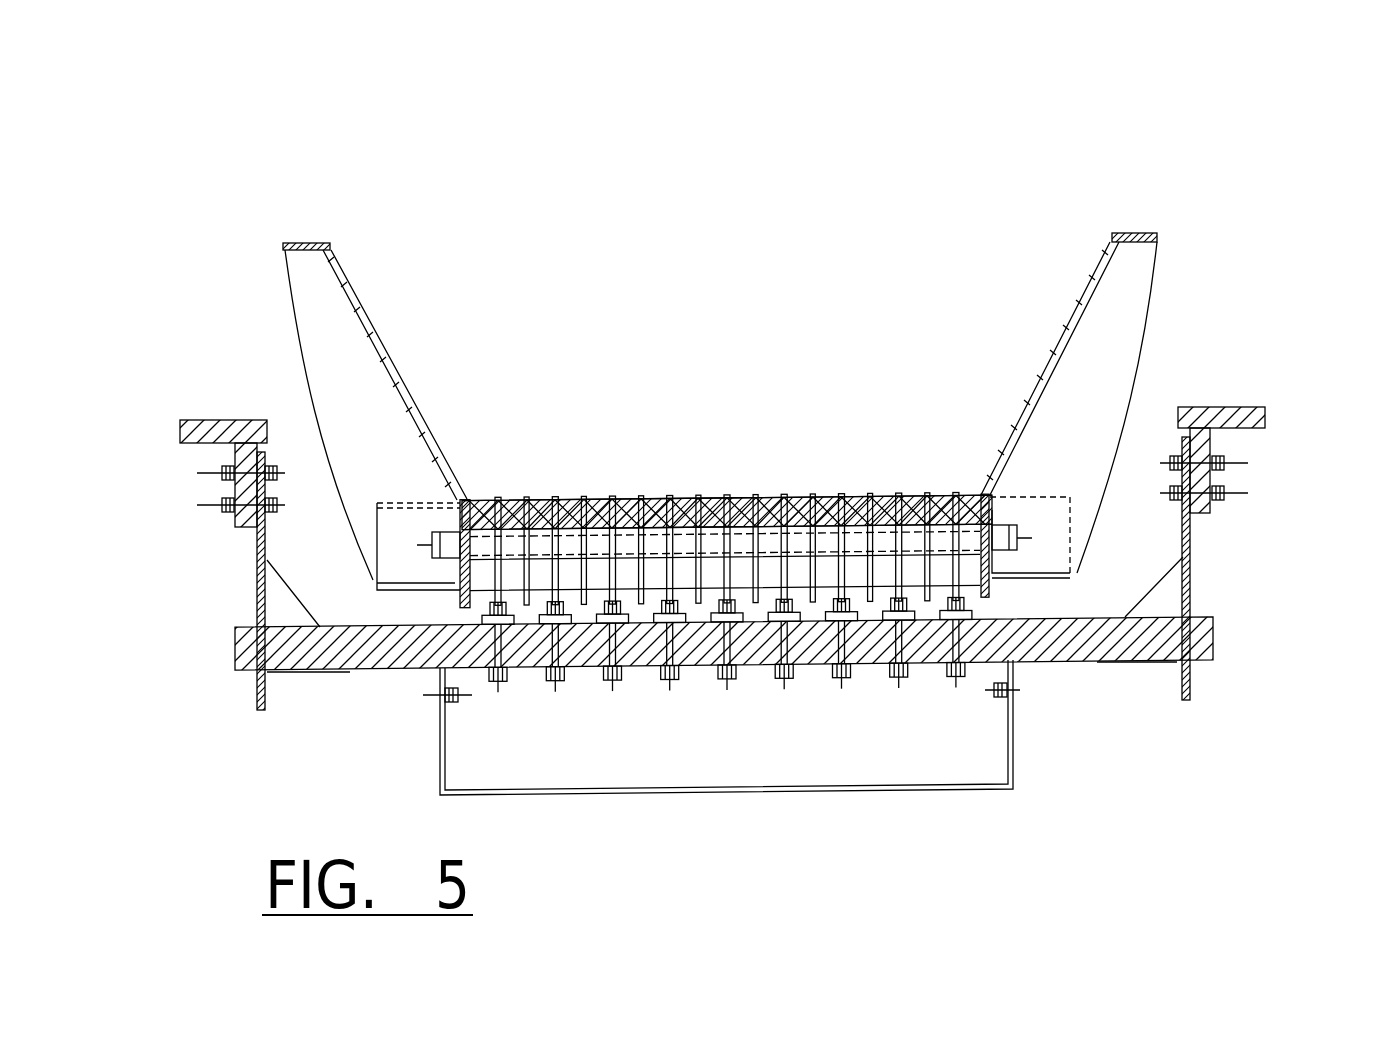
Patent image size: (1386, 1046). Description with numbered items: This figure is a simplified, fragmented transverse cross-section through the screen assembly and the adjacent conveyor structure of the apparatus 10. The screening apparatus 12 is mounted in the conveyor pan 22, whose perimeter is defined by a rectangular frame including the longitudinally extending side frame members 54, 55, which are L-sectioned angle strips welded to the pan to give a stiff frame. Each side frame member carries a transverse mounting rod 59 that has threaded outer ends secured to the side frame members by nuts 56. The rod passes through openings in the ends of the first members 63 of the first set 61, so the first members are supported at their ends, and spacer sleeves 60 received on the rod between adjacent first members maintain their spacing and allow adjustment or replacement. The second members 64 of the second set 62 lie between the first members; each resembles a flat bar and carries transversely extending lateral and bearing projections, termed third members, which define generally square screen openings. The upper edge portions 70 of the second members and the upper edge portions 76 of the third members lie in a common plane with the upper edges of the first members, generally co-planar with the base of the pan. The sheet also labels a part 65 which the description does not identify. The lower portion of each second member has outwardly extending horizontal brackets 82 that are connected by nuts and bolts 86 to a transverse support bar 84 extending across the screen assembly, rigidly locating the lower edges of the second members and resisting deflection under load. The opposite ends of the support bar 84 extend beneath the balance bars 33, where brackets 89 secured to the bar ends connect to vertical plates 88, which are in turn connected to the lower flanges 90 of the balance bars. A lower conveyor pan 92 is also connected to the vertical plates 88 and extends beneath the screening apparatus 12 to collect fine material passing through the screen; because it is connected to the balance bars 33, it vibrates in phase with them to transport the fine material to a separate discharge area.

The apparatus 10 is at (555, 180).
The screening apparatus 12 is at (810, 236).
The conveyor pan 22 is at (1022, 190).
The balance bars 33 is at (223, 427).
The side frame member 54 is at (987, 497).
The side frame member 55 is at (445, 530).
The nuts 56 is at (458, 578).
The transverse mounting rod 59 is at (1017, 535).
The spacer sleeves 60 is at (800, 557).
The first set 61 is at (801, 394).
The first members 63 is at (813, 494).
The second set 62 is at (555, 454).
The second members 64 is at (613, 494).
The blade tip 65 is at (698, 495).
The upper edge portion 70 is at (727, 494).
The upper edge portion 76 is at (640, 493).
The horizontal brackets 82 is at (481, 623).
The transverse support bars 84 is at (982, 647).
The nuts and bolts 86 is at (717, 677).
The vertical plates 88 is at (253, 570).
The brackets 89 is at (317, 568).
The lower flanges 90 is at (220, 487).
The lower conveyor pan 92 is at (470, 797).